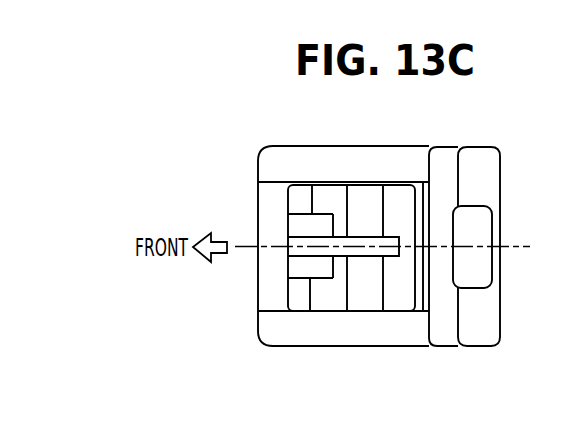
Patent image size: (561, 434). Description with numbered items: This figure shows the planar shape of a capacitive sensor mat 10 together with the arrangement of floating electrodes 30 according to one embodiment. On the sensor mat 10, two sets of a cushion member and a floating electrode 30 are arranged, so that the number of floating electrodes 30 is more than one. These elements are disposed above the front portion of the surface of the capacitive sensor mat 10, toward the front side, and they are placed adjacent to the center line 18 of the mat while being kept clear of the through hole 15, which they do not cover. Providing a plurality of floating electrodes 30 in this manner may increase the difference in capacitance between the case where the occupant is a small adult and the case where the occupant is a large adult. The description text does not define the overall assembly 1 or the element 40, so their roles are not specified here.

The connector housing 1 is at (398, 200).
The case body 10 is at (398, 288).
The slot 15 is at (367, 252).
The shaft 18 is at (510, 246).
The engaging portion 30 is at (300, 227).
The cover 40 is at (475, 146).